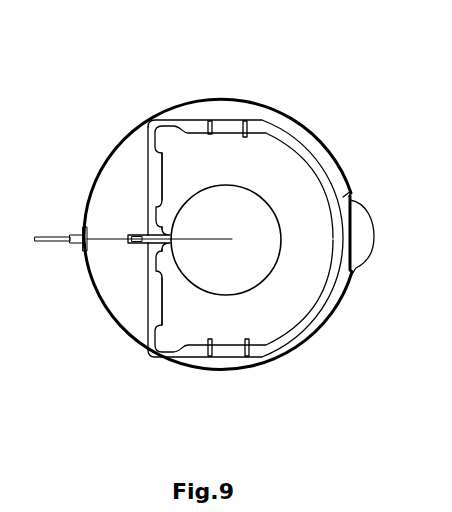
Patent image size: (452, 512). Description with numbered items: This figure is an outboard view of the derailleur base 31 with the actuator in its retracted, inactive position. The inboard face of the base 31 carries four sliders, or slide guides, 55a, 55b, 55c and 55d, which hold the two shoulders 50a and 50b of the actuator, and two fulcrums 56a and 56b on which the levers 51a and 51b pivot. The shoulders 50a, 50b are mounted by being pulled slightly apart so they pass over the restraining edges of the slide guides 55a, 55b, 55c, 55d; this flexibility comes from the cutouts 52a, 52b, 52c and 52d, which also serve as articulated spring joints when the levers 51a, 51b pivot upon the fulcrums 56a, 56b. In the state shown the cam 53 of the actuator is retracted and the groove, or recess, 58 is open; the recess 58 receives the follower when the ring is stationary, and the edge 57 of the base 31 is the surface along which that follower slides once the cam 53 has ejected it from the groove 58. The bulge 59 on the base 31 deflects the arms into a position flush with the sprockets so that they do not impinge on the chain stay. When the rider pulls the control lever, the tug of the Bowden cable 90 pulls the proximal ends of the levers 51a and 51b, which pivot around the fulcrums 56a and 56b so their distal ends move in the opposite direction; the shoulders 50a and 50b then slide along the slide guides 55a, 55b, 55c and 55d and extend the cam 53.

The base 31 is at (213, 107).
The shoulder 50a is at (244, 120).
The shoulder 50b is at (229, 350).
The lever 51a is at (156, 169).
The lever 51b is at (156, 312).
The cutout 52a is at (157, 118).
The cutout 52b is at (149, 353).
The cutout 52c is at (158, 223).
The cutout 52d is at (157, 260).
The cam 53 is at (316, 318).
The slider 55a is at (210, 134).
The slider 55b is at (245, 137).
The slider 55c is at (210, 340).
The slider 55d is at (246, 340).
The fulcrum 56a is at (163, 184).
The fulcrum 56b is at (163, 294).
The edge of the base 57 is at (318, 130).
The recess 58 is at (349, 190).
The bulge 59 is at (374, 237).
The Bowden cable 90 is at (86, 244).